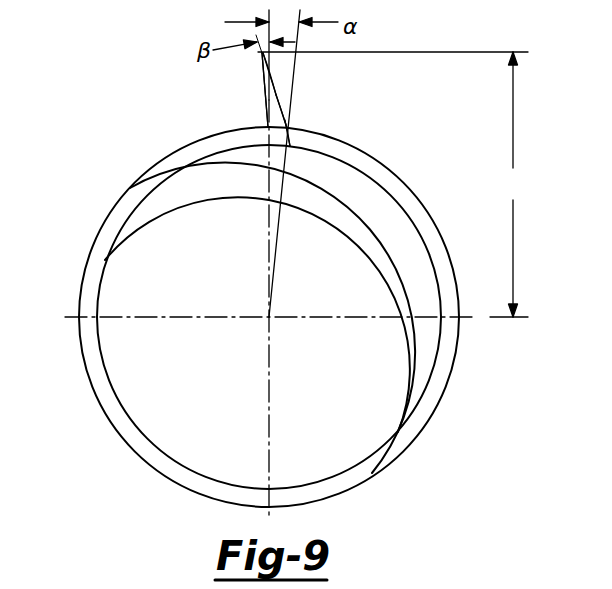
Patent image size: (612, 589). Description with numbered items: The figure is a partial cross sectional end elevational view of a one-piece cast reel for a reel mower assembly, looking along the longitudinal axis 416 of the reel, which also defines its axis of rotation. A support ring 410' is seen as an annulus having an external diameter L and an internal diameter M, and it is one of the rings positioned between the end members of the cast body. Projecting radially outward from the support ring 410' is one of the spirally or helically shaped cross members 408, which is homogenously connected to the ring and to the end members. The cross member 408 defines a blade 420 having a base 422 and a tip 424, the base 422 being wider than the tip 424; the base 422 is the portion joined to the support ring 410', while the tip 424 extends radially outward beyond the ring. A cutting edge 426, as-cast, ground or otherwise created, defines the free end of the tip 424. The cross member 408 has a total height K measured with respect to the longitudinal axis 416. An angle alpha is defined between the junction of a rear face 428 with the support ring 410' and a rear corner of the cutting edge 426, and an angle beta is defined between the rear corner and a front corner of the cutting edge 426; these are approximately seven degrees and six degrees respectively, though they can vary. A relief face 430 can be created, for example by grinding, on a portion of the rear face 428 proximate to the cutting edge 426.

The cross member 408 is at (395, 82).
The support ring 410' is at (331, 317).
The longitudinal axis 416 is at (269, 317).
The blade 420 is at (266, 126).
The base 422 is at (278, 136).
The tip 424 is at (260, 73).
The cutting edge 426 is at (262, 57).
The rear face 428 is at (280, 88).
The relief face 430 is at (272, 65).
The total height K is at (509, 184).
The external diameter L is at (130, 188).
The internal diameter M is at (105, 260).